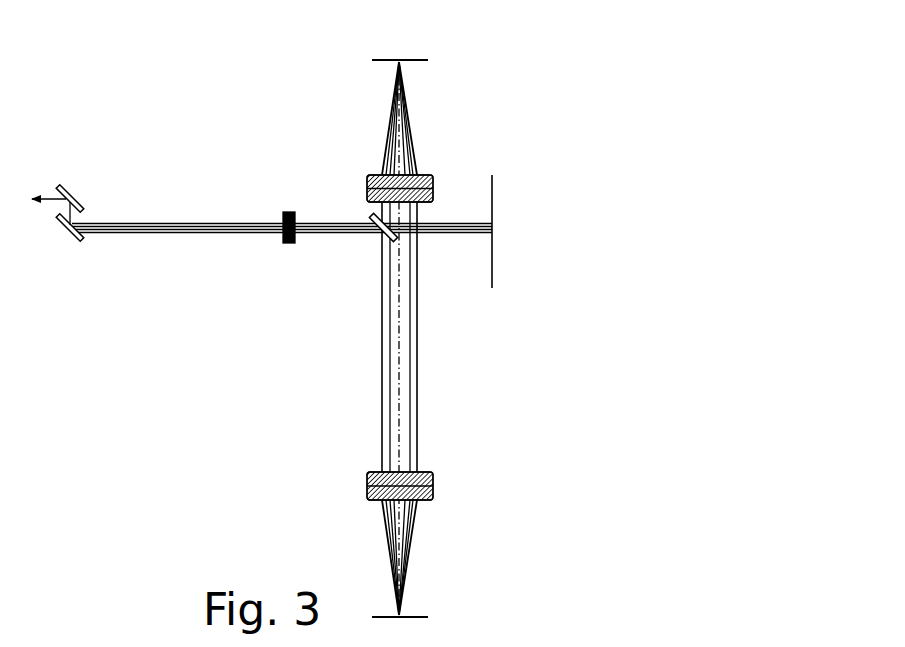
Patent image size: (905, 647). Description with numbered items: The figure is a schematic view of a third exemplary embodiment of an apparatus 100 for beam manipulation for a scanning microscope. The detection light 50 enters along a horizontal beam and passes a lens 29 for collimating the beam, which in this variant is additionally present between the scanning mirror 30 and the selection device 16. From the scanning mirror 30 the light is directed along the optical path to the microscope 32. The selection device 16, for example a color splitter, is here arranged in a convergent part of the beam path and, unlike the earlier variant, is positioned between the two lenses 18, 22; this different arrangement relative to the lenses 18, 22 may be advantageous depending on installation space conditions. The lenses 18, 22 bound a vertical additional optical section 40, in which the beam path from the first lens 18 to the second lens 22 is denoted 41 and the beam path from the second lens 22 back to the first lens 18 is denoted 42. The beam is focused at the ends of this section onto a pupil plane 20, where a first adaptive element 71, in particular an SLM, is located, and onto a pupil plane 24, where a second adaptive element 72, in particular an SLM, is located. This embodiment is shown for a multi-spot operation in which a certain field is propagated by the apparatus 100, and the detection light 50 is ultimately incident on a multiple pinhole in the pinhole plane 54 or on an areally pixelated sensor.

The apparatus 100 is at (215, 389).
The detection light 50 is at (455, 236).
The additional optical section 40 is at (390, 338).
The beam path from the second lens 22 to the first lens 18 42 is at (389, 312).
The beam path from the first lens 18 to the second lens 22 41 is at (411, 338).
The lens 18 is at (367, 181).
The lens 22 is at (367, 491).
The pupil plane 20 is at (438, 32).
The first adaptive element 71 is at (416, 59).
The pupil plane 24 is at (435, 586).
The second adaptive element 72 is at (420, 616).
The selection device 16 is at (400, 211).
The pinhole plane 54 is at (493, 178).
The lens 29 is at (289, 244).
The scanning mirror 30 is at (64, 219).
The optical path to the microscope 32 is at (61, 198).